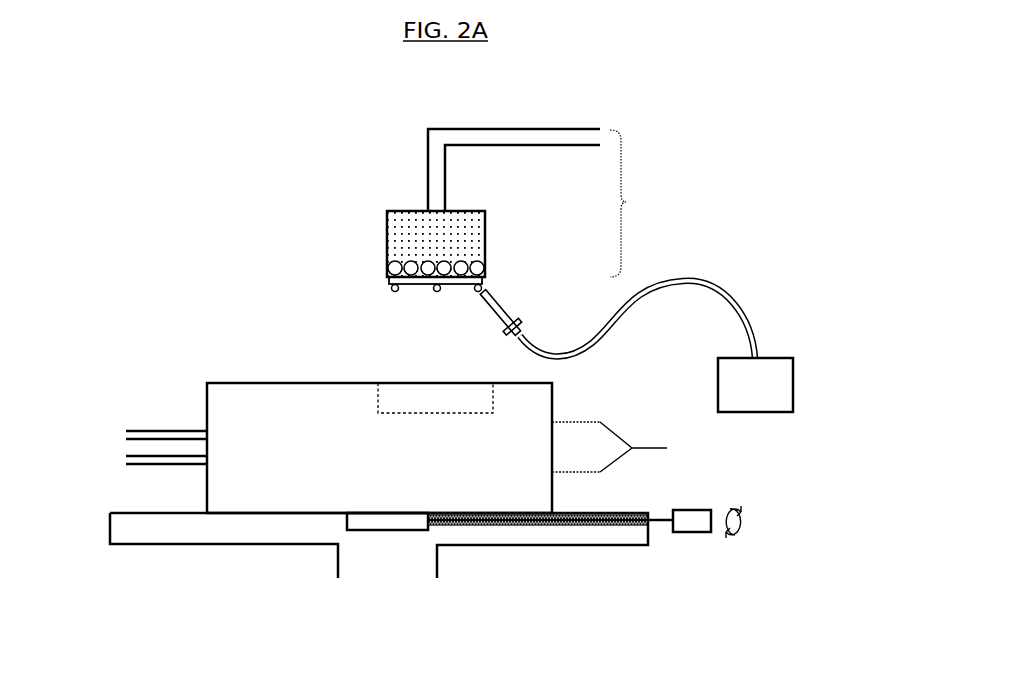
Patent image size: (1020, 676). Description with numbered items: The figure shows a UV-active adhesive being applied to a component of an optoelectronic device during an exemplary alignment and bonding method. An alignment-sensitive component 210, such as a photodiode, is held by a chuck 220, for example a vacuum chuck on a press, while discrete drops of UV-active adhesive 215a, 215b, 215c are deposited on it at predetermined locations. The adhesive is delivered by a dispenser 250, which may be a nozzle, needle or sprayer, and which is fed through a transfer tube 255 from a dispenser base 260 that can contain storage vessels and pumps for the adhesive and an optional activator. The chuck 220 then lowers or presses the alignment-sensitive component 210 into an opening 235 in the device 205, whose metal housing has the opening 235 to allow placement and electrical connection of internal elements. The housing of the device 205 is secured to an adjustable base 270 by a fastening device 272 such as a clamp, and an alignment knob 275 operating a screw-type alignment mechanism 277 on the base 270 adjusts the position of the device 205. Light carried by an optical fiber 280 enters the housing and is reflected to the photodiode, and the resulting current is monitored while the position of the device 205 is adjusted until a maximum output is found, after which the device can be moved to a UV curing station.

The device housing 205 is at (207, 487).
The alignment-sensitive component 210 is at (493, 276).
The UV-active adhesive 215a is at (391, 288).
The UV-active adhesive 215b is at (482, 288).
The UV-active adhesive 215c is at (437, 292).
The chuck 220 is at (550, 203).
The opening 235 is at (396, 380).
The dispenser 250 is at (512, 311).
The transfer tube 255 is at (728, 288).
The dispenser base 260 is at (793, 382).
The adjustable base 270 is at (438, 562).
The fastening device 272 is at (382, 531).
The alignment knob 275 is at (693, 533).
The screw-type alignment mechanism 277 is at (593, 527).
The optical fiber 280 is at (658, 450).